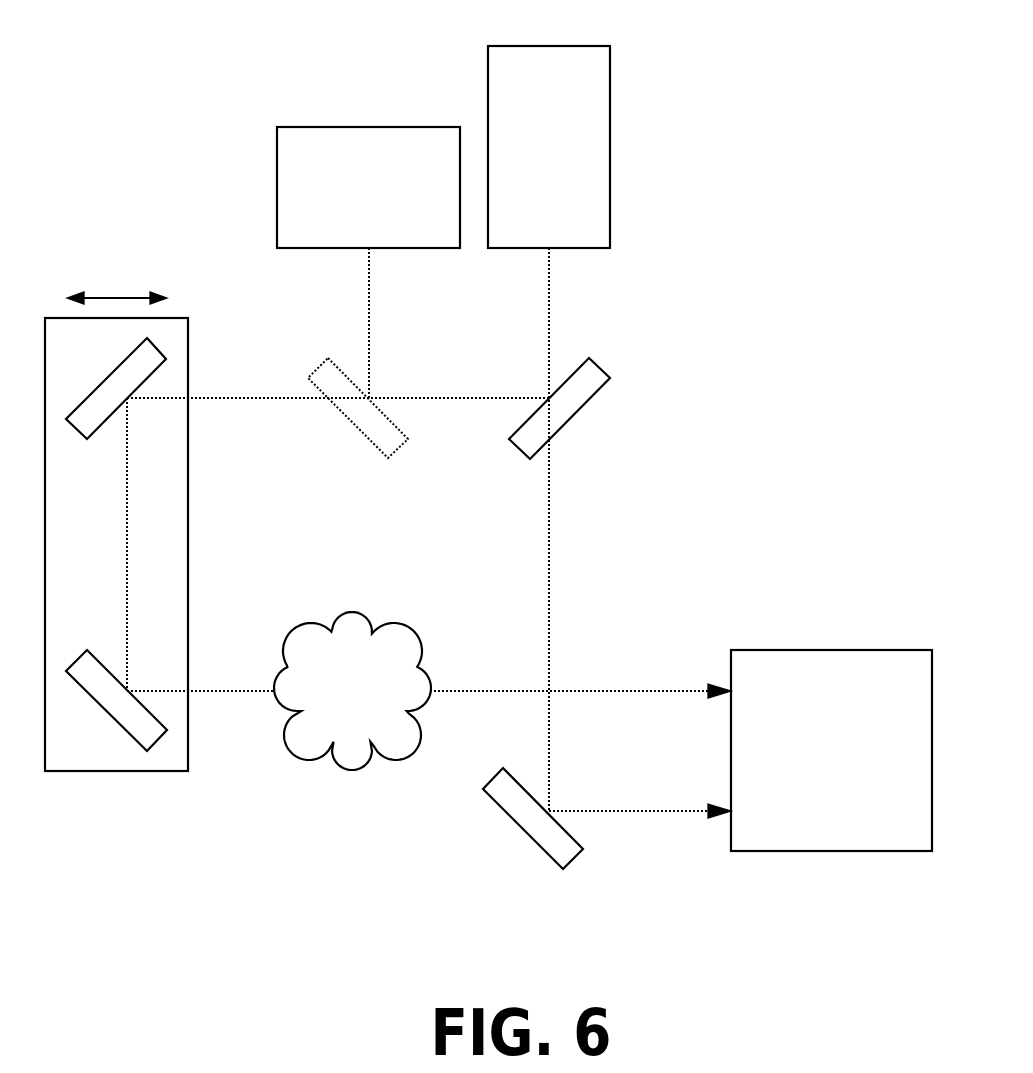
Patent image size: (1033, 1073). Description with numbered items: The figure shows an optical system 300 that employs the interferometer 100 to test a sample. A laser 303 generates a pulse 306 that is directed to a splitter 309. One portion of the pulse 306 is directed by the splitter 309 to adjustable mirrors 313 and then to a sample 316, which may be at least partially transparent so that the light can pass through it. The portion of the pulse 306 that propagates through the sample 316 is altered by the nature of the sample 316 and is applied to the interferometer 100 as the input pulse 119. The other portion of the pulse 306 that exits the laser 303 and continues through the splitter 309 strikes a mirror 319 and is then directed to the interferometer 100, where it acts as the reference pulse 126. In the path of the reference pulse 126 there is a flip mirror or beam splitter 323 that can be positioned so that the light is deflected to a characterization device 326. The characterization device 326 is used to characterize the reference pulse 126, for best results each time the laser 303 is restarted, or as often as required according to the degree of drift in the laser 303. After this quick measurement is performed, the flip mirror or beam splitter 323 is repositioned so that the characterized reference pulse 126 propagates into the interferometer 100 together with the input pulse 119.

The interferometer 100 is at (853, 795).
The input pulse 119 is at (605, 690).
The reference pulse 126 is at (605, 811).
The optical system 300 is at (790, 277).
The laser 303 is at (571, 175).
The pulse 306 is at (549, 320).
The splitter 309 is at (580, 393).
The adjustable mirrors 313 is at (188, 369).
The sample 316 is at (330, 717).
The mirror 319 is at (557, 850).
The flip mirror or beam splitter 323 is at (390, 438).
The characterization device 326 is at (350, 224).